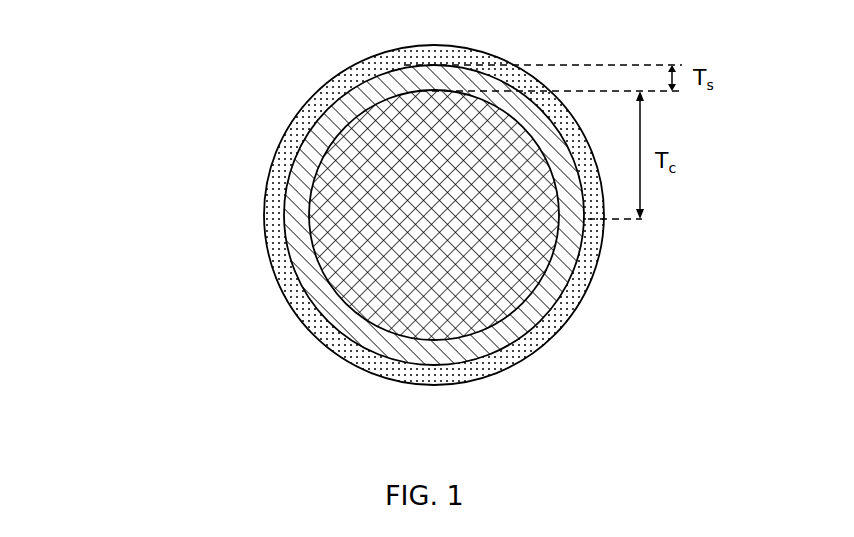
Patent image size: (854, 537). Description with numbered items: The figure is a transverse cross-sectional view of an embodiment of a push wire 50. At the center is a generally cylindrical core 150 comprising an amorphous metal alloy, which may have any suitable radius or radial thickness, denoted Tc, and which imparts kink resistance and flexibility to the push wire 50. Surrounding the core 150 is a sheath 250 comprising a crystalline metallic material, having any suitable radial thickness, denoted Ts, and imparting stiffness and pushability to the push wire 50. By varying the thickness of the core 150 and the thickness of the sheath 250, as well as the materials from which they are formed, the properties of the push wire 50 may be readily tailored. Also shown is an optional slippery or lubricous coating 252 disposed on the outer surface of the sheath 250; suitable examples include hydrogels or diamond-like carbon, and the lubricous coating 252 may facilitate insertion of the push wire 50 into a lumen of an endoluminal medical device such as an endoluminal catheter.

The push wire 50 is at (371, 210).
The core 150 is at (352, 270).
The sheath 250 is at (293, 202).
The lubricous coating 252 is at (572, 292).